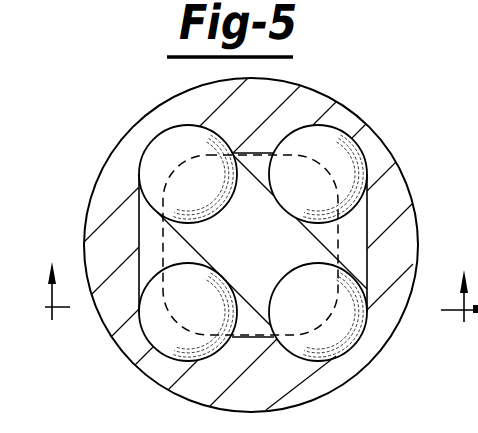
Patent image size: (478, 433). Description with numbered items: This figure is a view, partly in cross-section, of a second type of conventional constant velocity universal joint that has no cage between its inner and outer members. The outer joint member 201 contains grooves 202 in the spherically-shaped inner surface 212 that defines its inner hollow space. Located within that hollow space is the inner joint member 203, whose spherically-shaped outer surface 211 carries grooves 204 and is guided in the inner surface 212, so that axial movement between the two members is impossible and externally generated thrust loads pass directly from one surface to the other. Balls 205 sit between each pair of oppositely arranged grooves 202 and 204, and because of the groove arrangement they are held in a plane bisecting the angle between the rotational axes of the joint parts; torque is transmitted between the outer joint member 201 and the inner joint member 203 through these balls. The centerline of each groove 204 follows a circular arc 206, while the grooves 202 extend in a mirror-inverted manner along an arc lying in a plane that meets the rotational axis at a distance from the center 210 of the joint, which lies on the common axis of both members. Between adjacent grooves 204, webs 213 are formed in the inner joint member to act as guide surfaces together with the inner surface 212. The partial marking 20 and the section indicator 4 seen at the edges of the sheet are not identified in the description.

The outer joint member 201 is at (397, 329).
The grooves 202 is at (333, 358).
The inner joint member 203 is at (341, 248).
The grooves 204 is at (226, 200).
The balls 205 is at (358, 141).
The circular arc 206 is at (176, 136).
The spherically-shaped outer surface 211 is at (226, 310).
The spherically-shaped inner surface 212 is at (266, 336).
The webs 213 is at (255, 168).
The center of the joint 210 is at (432, 420).
The element 20 is at (468, 357).
The section line 4 is at (246, 294).